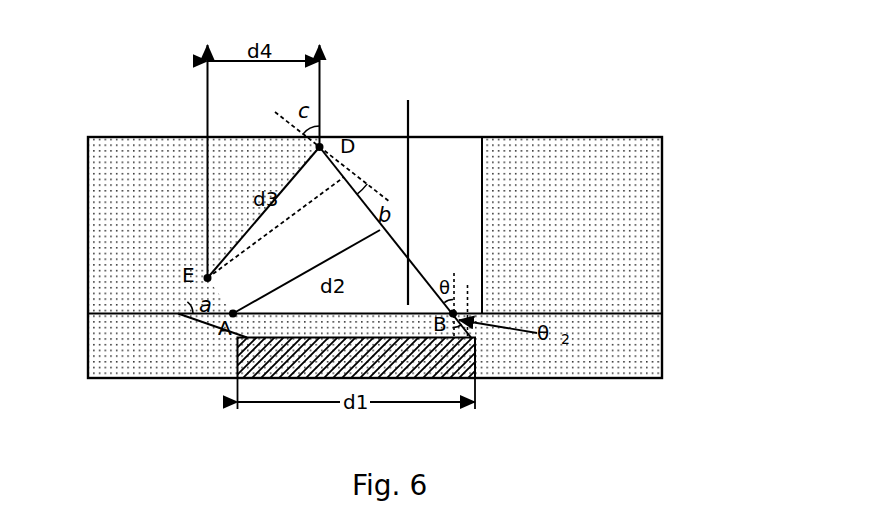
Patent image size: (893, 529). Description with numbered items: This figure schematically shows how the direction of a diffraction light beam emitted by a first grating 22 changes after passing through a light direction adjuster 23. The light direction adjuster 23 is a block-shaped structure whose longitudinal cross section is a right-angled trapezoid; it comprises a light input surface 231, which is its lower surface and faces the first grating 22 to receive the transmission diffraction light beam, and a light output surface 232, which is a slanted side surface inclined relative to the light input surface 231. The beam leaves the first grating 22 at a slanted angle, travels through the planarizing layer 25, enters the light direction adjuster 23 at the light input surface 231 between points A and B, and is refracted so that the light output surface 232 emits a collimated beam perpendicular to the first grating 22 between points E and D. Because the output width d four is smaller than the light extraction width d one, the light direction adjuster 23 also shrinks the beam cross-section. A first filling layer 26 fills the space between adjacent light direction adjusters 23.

The first grating 22 is at (470, 372).
The light direction adjuster 23 is at (437, 140).
The planarizing layer 25 is at (620, 358).
The first filling layer 26 is at (630, 197).
The light input surface 231 is at (409, 190).
The light output surface 232 is at (297, 170).